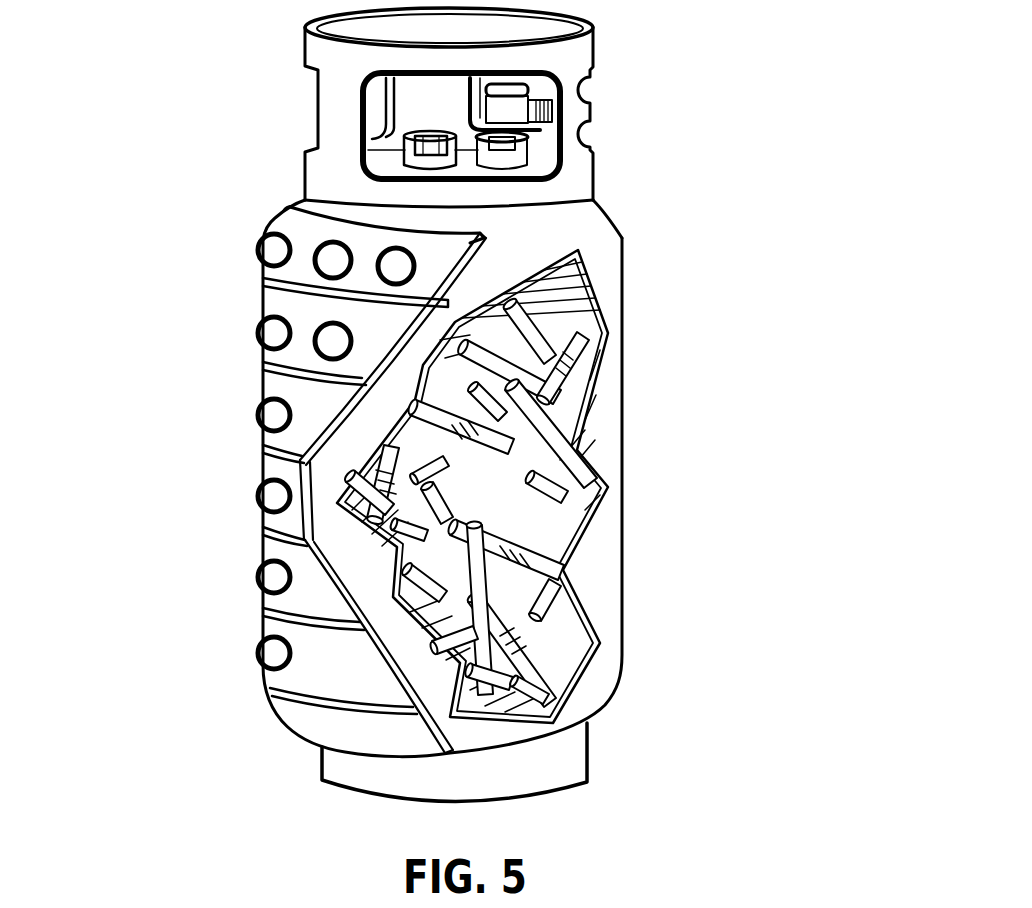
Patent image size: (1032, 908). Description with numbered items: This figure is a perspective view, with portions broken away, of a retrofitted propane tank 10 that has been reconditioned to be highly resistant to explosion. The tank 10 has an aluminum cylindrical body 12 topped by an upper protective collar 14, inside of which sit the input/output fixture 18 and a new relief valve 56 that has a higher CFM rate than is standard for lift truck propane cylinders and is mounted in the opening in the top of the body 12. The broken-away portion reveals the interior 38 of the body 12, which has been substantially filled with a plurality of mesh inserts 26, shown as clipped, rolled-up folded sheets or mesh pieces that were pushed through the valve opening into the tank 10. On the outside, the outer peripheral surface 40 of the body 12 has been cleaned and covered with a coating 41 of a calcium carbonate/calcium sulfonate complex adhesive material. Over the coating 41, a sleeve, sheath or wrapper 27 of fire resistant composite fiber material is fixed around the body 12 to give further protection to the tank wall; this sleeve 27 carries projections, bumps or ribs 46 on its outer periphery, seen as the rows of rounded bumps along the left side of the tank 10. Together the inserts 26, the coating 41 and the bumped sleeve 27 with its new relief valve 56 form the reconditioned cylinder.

The propane tank 10 is at (684, 655).
The cylindrical body 12 is at (600, 441).
The upper protective collar 14 is at (573, 53).
The input/output fixture 18 is at (568, 103).
The mesh inserts 26 is at (562, 302).
The sleeve, sheath or wrapper 27 is at (297, 357).
The interior 38 is at (613, 498).
The outer peripheral surface 40 is at (588, 223).
The coating 41 is at (624, 377).
The projections, bumps or ribs 46 is at (272, 653).
The relief valve 56 is at (428, 138).